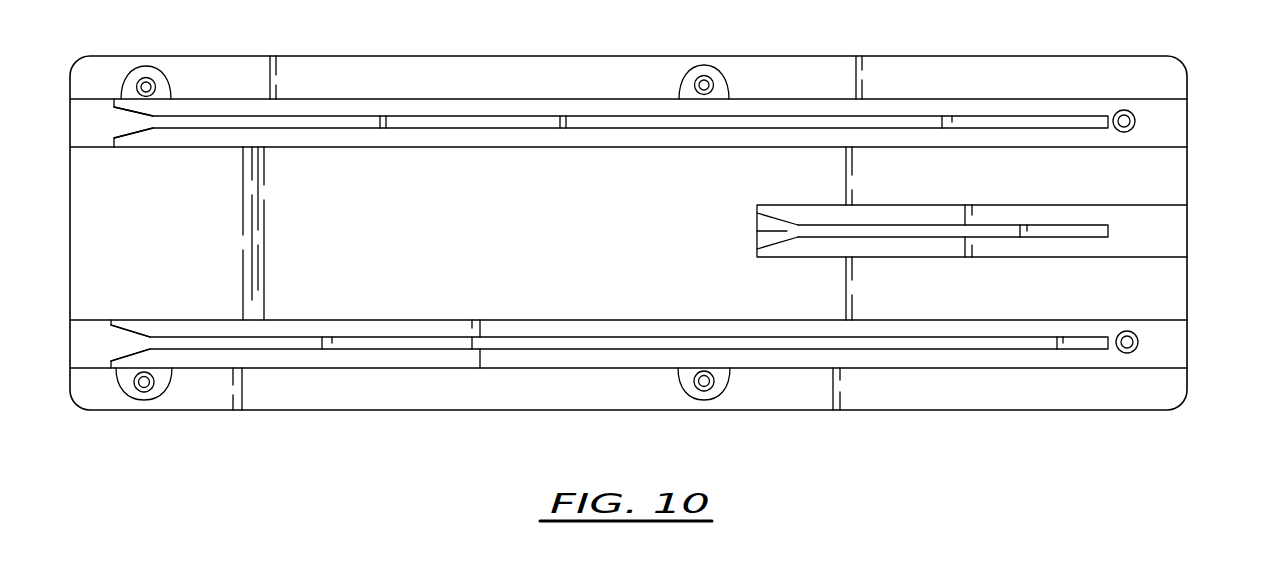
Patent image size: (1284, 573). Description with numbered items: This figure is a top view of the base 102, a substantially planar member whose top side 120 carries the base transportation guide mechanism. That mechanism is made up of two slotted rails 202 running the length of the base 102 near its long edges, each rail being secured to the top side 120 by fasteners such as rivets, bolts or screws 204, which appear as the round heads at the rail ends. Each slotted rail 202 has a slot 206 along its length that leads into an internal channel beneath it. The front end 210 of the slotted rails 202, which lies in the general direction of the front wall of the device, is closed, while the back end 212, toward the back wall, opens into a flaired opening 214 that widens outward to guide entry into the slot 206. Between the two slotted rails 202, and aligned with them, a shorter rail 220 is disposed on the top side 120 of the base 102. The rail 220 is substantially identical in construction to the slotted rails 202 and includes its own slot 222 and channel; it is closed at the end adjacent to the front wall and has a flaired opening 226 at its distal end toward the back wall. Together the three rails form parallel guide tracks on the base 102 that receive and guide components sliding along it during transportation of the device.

The base 102 is at (918, 82).
The top side 120 is at (1113, 72).
The slotted rails 202 is at (478, 104).
The screws 204 is at (146, 87).
The slot 206 is at (806, 118).
The front end 210 is at (1188, 191).
The back end 212 is at (72, 240).
The flaired opening 214 is at (130, 122).
The rail 220 is at (997, 213).
The slot 222 is at (887, 230).
The flaired opening 226 is at (753, 230).